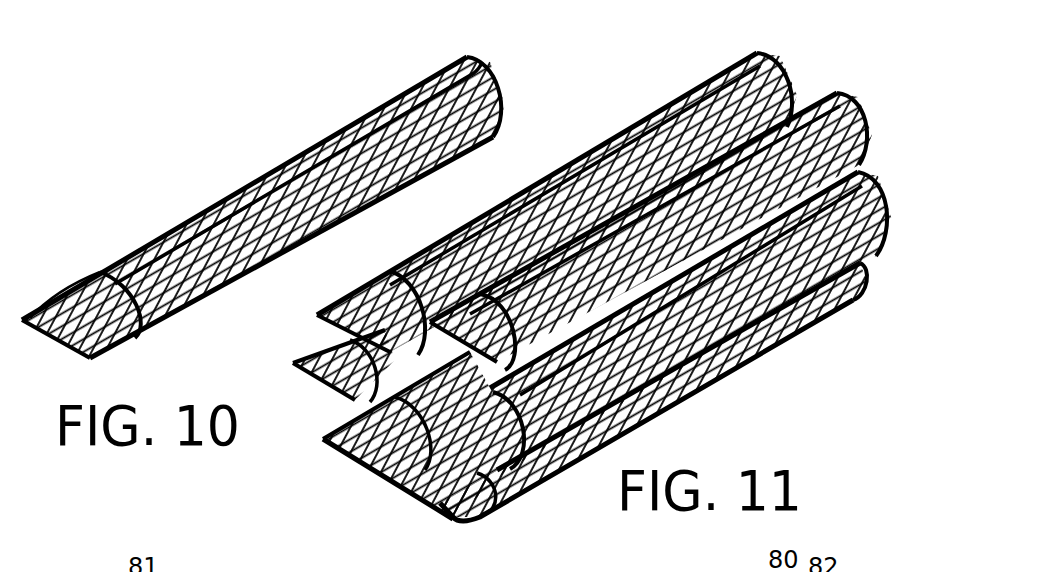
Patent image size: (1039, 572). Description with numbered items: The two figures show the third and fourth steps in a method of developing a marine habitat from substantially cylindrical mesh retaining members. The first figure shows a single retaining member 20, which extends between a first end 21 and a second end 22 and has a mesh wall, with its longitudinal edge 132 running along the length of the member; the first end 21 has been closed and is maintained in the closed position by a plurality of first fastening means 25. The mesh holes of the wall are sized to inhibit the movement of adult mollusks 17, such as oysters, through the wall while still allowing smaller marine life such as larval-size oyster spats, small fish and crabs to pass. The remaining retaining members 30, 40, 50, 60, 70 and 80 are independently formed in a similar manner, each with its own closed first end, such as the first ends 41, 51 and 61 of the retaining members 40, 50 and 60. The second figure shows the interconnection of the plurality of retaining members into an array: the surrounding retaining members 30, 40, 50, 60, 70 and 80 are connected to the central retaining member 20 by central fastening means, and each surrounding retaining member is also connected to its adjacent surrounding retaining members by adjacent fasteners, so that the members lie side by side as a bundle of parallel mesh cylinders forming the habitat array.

In FIG. 11, the adult mollusks 17 is at (495, 571).
In FIG. 10, the retaining member 20 is at (217, 197).
In FIG. 11, the retaining member 20 is at (340, 398).
In FIG. 10, the first end 21 is at (55, 347).
In FIG. 11, the first end 21 is at (292, 364).
In FIG. 10, the second end 22 is at (497, 82).
In FIG. 10, the first fastening means 25 is at (37, 313).
In FIG. 11, the retaining member 30 is at (890, 207).
In FIG. 11, the retaining member 40 is at (847, 307).
In FIG. 11, the first end 41 is at (427, 505).
In FIG. 11, the retaining member 50 is at (360, 420).
In FIG. 11, the first end 51 is at (352, 457).
In FIG. 11, the retaining member 60 is at (315, 338).
In FIG. 11, the first end 61 is at (352, 292).
In FIG. 11, the retaining member 70 is at (789, 100).
In FIG. 11, the retaining member 80 is at (850, 108).
In FIG. 10, the longitudinal edge rim 132 is at (417, 88).